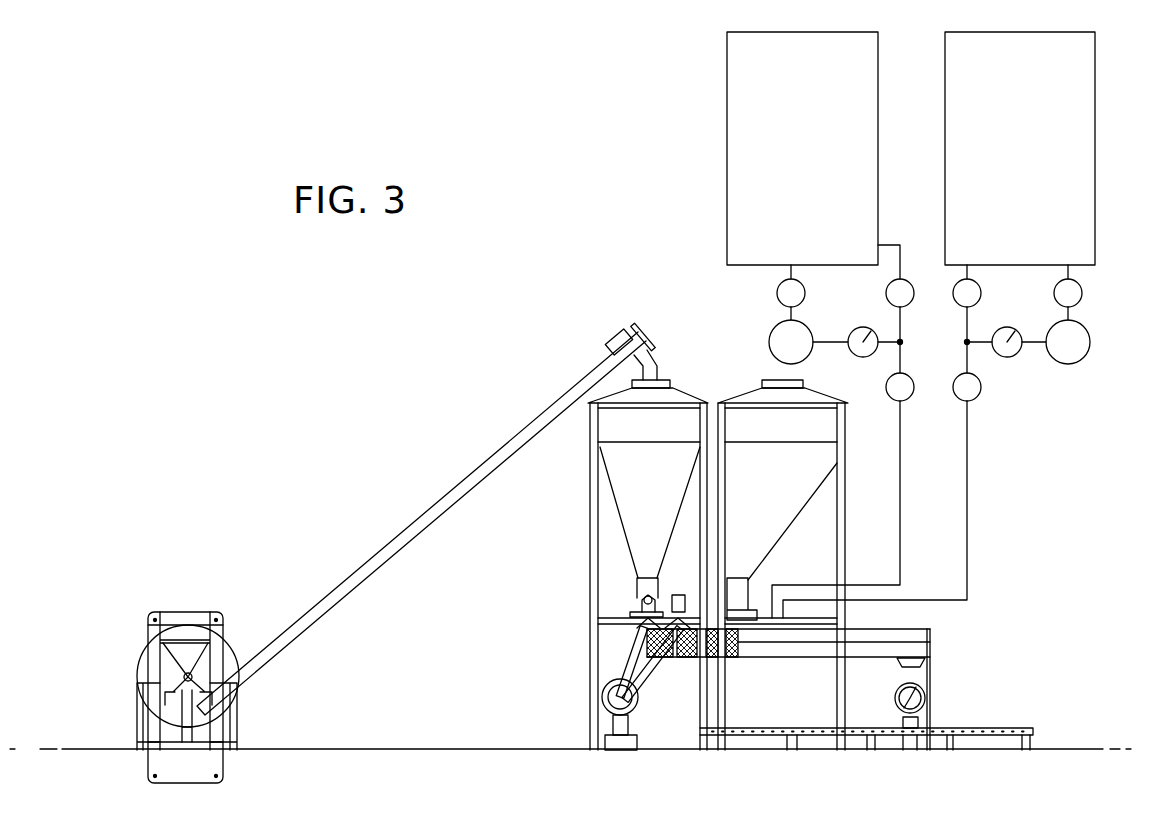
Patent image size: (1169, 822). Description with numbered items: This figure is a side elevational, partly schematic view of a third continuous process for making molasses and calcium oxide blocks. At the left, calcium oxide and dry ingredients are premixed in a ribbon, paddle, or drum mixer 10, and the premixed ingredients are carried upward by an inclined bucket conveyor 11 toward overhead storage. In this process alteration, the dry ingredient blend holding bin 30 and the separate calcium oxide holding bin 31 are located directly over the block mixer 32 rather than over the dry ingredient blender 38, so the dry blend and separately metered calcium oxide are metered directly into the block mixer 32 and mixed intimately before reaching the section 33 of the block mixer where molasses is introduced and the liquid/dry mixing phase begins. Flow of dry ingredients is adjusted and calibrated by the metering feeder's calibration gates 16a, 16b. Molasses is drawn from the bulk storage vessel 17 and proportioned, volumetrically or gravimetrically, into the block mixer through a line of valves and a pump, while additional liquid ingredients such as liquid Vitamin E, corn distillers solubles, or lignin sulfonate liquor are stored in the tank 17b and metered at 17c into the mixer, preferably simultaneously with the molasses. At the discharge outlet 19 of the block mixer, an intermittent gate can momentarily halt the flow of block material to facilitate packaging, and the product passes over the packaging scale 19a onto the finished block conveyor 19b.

The mixer 10 is at (222, 605).
The bucket conveyor 11 is at (412, 530).
The calibration gate 16a is at (628, 625).
The calibration gate 16b is at (600, 707).
The bulk storage vessel 17 is at (747, 162).
The tank 17b is at (1077, 165).
The metering point 17c is at (1053, 370).
The discharge outlet 19 is at (940, 652).
The packaging scale 19a is at (922, 702).
The finished block conveyor 19b is at (1023, 725).
The dry ingredient blend holding bin 30 is at (617, 482).
The calcium oxide holding bin 31 is at (802, 492).
The block mixer 32 is at (808, 650).
The section of the block mixer 33 is at (738, 648).
The dry ingredient blender 38 is at (690, 658).